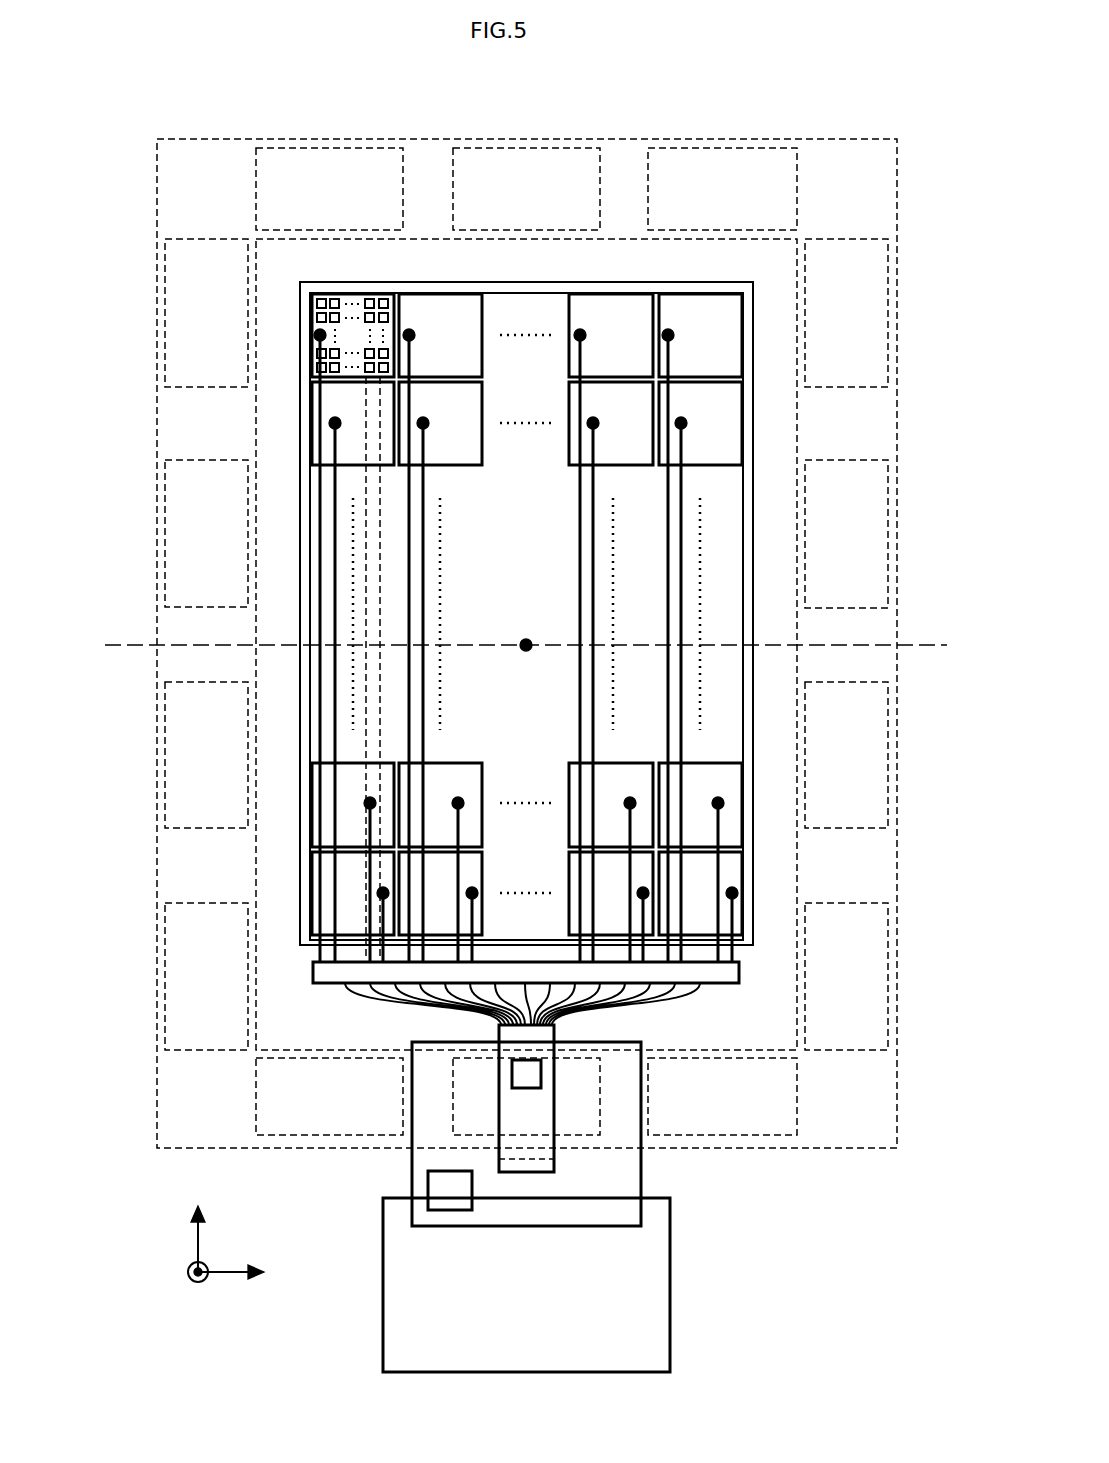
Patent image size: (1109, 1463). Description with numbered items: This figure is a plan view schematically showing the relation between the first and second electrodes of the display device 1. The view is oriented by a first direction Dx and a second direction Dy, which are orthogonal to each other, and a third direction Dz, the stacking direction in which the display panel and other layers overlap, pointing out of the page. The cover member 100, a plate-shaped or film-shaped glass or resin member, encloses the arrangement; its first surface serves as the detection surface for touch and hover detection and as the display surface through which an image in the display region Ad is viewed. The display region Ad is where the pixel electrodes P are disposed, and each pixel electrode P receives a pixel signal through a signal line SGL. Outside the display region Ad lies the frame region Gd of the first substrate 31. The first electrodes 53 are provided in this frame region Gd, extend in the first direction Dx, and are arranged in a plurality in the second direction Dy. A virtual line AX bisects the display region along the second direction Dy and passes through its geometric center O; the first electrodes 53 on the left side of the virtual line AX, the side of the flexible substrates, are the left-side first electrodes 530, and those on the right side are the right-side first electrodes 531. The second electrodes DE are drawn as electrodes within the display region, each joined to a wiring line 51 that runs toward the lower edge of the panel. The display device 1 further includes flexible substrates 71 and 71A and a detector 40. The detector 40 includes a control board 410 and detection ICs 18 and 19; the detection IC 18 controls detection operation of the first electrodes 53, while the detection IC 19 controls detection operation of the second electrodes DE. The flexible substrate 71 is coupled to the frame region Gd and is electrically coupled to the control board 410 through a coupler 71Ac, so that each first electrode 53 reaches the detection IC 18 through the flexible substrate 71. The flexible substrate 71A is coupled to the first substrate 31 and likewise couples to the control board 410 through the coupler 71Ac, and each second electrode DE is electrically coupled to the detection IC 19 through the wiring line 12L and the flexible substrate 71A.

The display device 1 is at (901, 82).
The cover member 100 is at (846, 137).
The first electrodes 53 is at (532, 645).
The right-side first electrodes 531 is at (933, 272).
The left-side first electrodes 530 is at (155, 972).
The frame region Gd is at (155, 165).
The display region Ad is at (527, 282).
The second electrodes DE is at (312, 333).
The pixel electrodes P is at (312, 360).
The wiring line 51 is at (335, 520).
The signal line SGL is at (380, 578).
The geometric center O is at (525, 632).
The virtual line AX is at (928, 650).
The first substrate 31 is at (800, 873).
The flexible substrate 71 is at (642, 1183).
The flexible substrate 71A is at (499, 1158).
The coupler 71Ac is at (523, 1163).
The detection IC 19 is at (541, 1073).
The detection IC 18 is at (440, 1212).
The detector 40 is at (697, 1268).
The control board 410 is at (673, 1298).
The wiring line 12L is at (683, 997).
The first direction Dx is at (198, 1225).
The second direction Dy is at (249, 1272).
The third direction Dz is at (182, 1272).